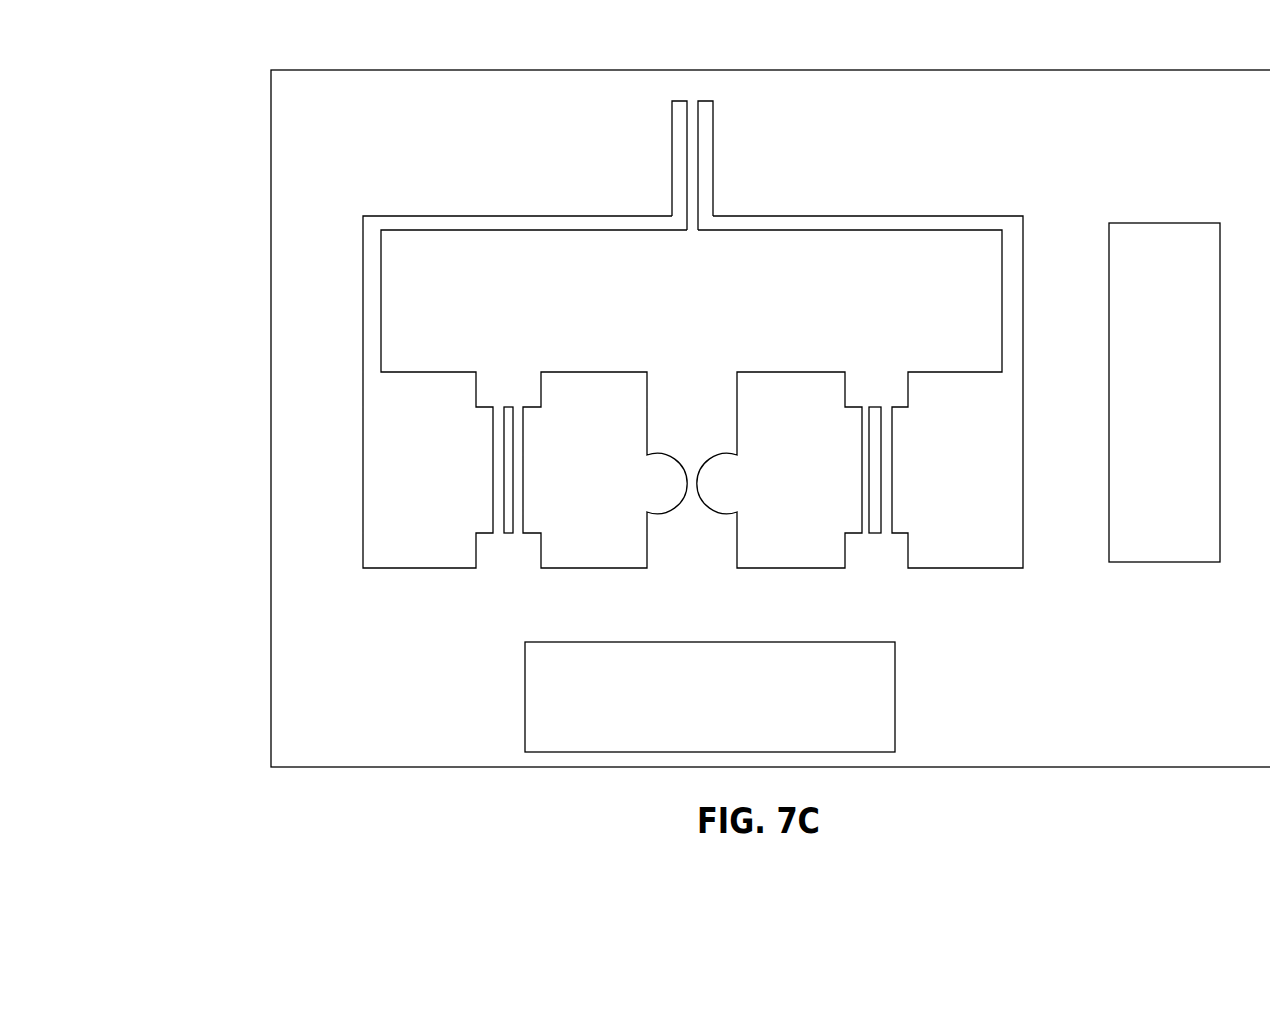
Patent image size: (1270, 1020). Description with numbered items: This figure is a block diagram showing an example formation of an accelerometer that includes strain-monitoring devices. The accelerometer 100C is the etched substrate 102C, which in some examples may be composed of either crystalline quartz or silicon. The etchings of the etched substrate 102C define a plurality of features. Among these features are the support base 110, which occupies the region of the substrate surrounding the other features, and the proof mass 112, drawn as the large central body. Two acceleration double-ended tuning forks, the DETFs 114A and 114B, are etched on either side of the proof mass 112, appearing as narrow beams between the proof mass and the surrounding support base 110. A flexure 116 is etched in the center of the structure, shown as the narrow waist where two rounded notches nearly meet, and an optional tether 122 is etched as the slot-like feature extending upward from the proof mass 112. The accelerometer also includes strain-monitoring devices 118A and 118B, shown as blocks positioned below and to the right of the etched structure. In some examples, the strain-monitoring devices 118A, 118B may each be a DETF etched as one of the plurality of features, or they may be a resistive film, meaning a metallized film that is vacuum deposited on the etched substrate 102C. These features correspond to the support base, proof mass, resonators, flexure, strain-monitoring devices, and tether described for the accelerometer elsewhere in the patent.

The accelerometer 100C is at (222, 92).
The etched substrate 102C is at (1018, 70).
The support base 110 is at (852, 146).
The proof mass 112 is at (672, 328).
The acceleration double-ended tuning fork 114A is at (492, 584).
The acceleration double-ended tuning fork 114B is at (922, 592).
The flexure 116 is at (690, 478).
The strain-monitoring device 118A is at (682, 737).
The strain-monitoring device 118B is at (1164, 392).
The tether 122 is at (690, 197).